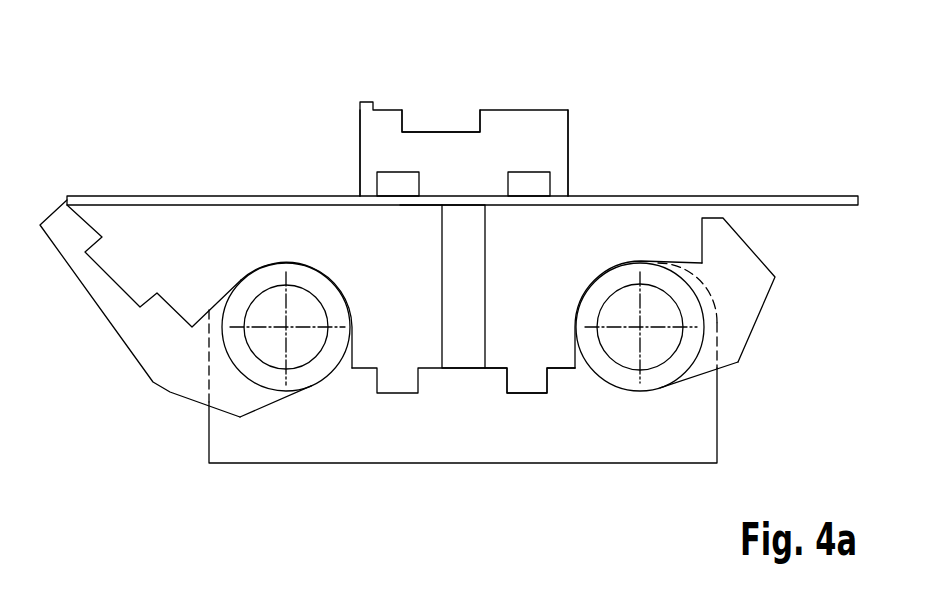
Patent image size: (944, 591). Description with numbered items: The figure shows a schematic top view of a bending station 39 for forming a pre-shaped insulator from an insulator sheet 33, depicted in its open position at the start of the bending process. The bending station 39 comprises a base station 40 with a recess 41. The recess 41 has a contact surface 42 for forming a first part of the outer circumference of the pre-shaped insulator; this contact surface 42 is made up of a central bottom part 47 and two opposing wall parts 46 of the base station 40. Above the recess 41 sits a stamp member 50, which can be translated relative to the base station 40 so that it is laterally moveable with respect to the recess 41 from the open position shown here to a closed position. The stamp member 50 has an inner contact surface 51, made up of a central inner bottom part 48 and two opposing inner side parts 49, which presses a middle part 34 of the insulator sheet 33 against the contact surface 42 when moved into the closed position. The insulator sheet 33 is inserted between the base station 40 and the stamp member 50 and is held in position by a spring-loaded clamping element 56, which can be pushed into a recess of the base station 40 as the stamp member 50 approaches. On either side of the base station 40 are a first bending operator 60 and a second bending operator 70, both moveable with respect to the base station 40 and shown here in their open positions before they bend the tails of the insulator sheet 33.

The bending station 39 is at (118, 80).
The insulator sheet 33 is at (789, 196).
The middle part 34 is at (433, 212).
The base station 40 is at (695, 435).
The recess 41 is at (524, 362).
The contact surface 42 is at (575, 326).
The wall parts 46 is at (353, 326).
The central bottom part 47 is at (462, 360).
The central inner bottom part 48 is at (463, 196).
The inner side parts 49 is at (360, 151).
The stamp member 50 is at (522, 122).
The inner contact surface 51 is at (463, 184).
The clamping element 56 is at (465, 242).
The first bending operator 60 is at (748, 310).
The second bending operator 70 is at (140, 333).